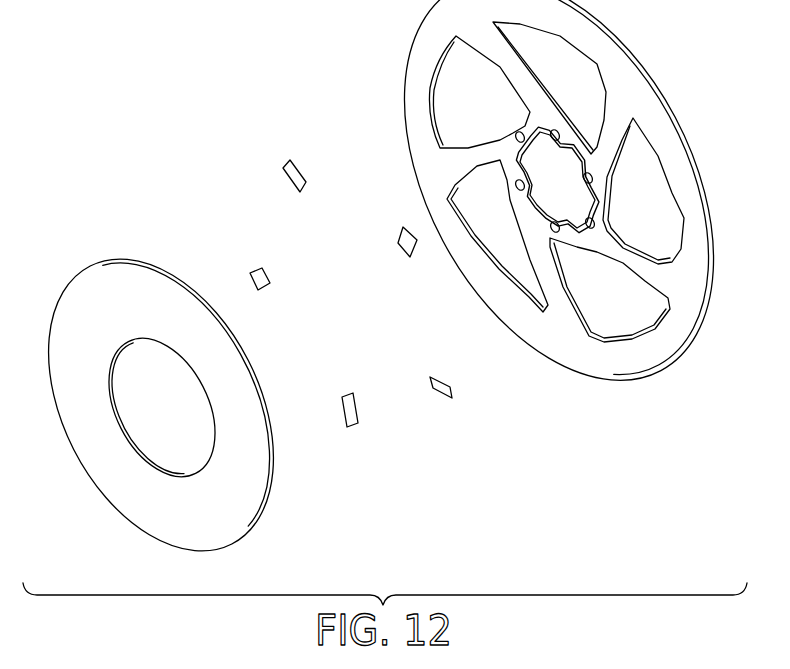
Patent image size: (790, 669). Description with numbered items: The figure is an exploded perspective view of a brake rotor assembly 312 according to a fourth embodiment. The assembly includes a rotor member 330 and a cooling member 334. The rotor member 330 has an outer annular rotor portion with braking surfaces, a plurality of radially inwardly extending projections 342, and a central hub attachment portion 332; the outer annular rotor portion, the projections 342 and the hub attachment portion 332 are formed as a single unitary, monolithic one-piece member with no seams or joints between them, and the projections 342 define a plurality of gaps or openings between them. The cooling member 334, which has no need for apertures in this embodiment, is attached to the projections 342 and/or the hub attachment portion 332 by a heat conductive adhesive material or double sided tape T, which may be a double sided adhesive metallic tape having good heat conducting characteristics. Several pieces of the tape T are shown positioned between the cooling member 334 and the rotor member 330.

The brake rotor assembly 312 is at (152, 129).
The rotor member 330 is at (622, 94).
The hub attachment portion 332 is at (525, 128).
The radially inwardly extending projections 342 is at (628, 262).
The cooling member 334 is at (236, 493).
The double sided tape T is at (300, 187).